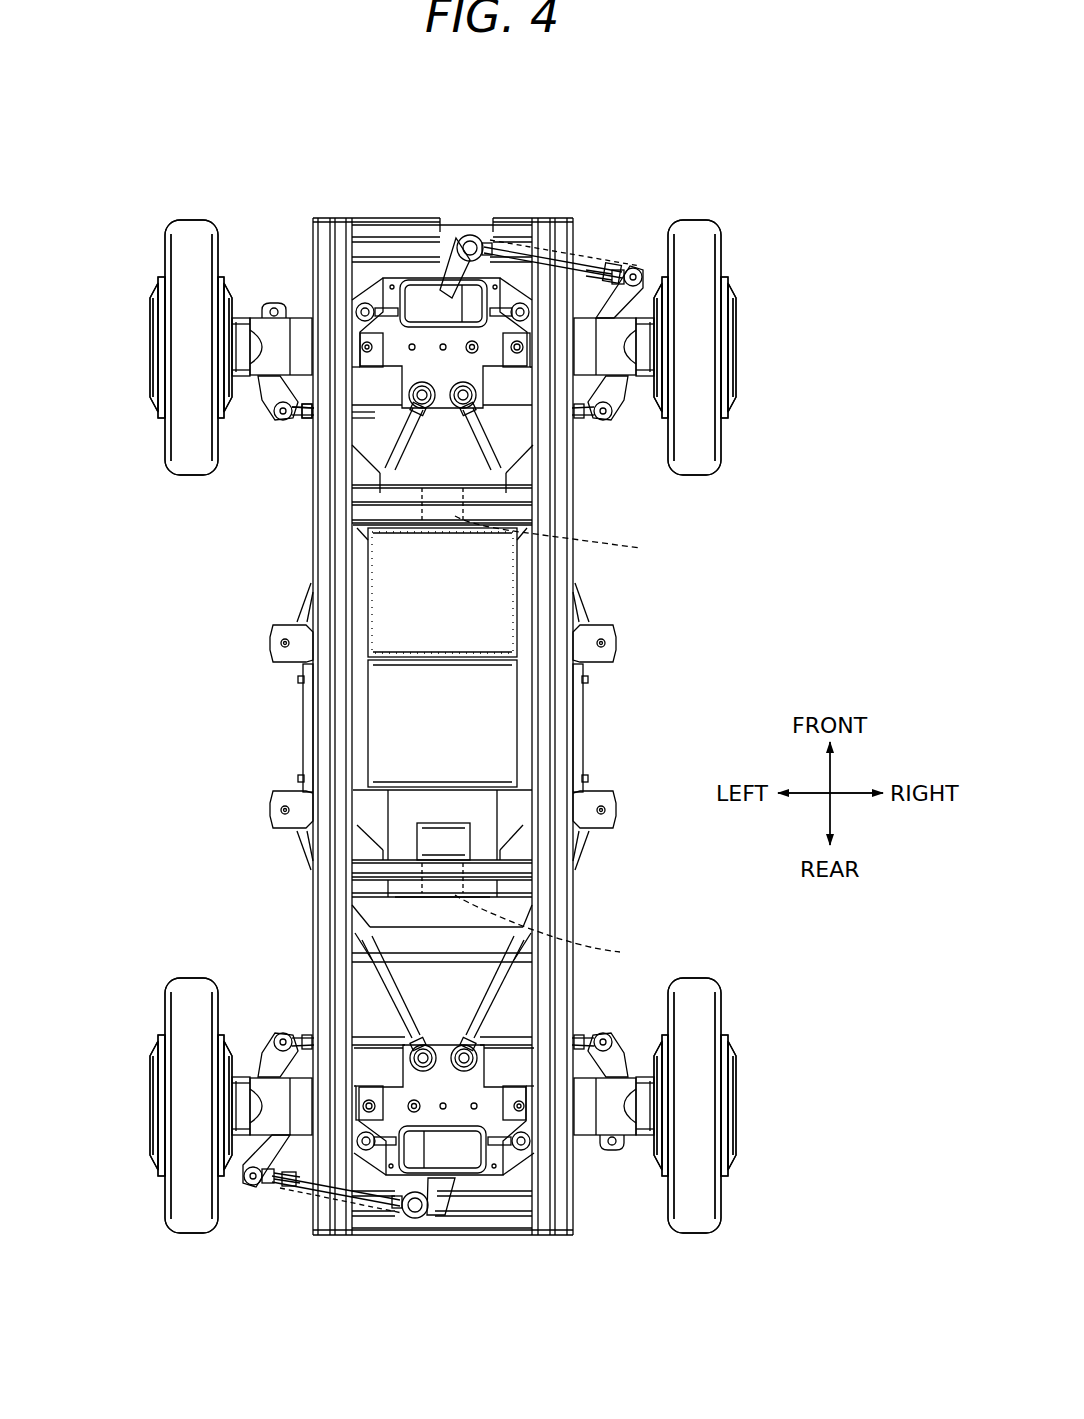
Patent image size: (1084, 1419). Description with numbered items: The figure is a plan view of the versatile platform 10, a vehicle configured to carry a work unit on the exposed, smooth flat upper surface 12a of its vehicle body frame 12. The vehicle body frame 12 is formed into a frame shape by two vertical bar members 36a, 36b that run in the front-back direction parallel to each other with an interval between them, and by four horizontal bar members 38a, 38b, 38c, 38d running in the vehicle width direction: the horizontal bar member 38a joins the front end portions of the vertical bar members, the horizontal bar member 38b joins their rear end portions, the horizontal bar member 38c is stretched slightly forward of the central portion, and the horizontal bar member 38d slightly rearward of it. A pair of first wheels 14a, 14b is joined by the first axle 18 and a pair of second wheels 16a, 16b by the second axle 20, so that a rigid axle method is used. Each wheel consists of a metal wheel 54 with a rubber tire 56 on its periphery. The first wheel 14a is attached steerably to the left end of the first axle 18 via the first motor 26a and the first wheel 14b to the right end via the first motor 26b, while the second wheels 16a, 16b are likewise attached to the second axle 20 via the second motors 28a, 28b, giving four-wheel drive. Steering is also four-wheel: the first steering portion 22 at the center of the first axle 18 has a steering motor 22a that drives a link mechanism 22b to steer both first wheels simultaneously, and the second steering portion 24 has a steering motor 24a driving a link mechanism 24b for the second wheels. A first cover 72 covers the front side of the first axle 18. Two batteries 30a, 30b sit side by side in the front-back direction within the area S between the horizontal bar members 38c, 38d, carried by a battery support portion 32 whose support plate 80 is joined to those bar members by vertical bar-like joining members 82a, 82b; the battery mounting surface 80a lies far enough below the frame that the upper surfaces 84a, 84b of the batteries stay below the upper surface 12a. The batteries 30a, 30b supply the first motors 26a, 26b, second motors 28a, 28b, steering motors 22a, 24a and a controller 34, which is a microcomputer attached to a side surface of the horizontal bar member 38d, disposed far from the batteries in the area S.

The versatile platform 10 is at (144, 99).
The vehicle body frame 12 is at (303, 570).
The upper surface 12a is at (323, 722).
The first wheel 14a is at (157, 433).
The first wheel 14b is at (733, 433).
The second wheel 16a is at (157, 1015).
The second wheel 16b is at (733, 1015).
The first axle 18 is at (495, 362).
The second axle 20 is at (502, 1085).
The first steering portion 22 is at (408, 263).
The steering motor 22a is at (448, 277).
The link mechanism 22b is at (583, 270).
The second steering portion 24 is at (417, 1233).
The steering motor 24a is at (463, 1160).
The link mechanism 24b is at (302, 1190).
The first motor 26a is at (222, 300).
The first motor 26b is at (662, 300).
The second motor 28a is at (227, 1153).
The second motor 28b is at (660, 1150).
The battery 30a is at (475, 568).
The battery 30b is at (472, 752).
The battery support portion 32 is at (478, 800).
The controller 34 is at (447, 840).
The vertical bar member 36a is at (327, 525).
The vertical bar member 36b is at (563, 498).
The horizontal bar member 38a is at (422, 268).
The horizontal bar member 38b is at (507, 1212).
The horizontal bar member 38c is at (375, 495).
The horizontal bar member 38d is at (418, 888).
The wheel 54 is at (148, 345).
The tire 56 is at (190, 228).
The first cover 72 is at (438, 303).
The support plate 80 is at (488, 838).
The upper surface 80a is at (483, 815).
The joining member 82a is at (569, 537).
The joining member 82b is at (561, 929).
The upper surface 84a is at (472, 612).
The upper surface 84b is at (453, 723).
The area S is at (393, 637).